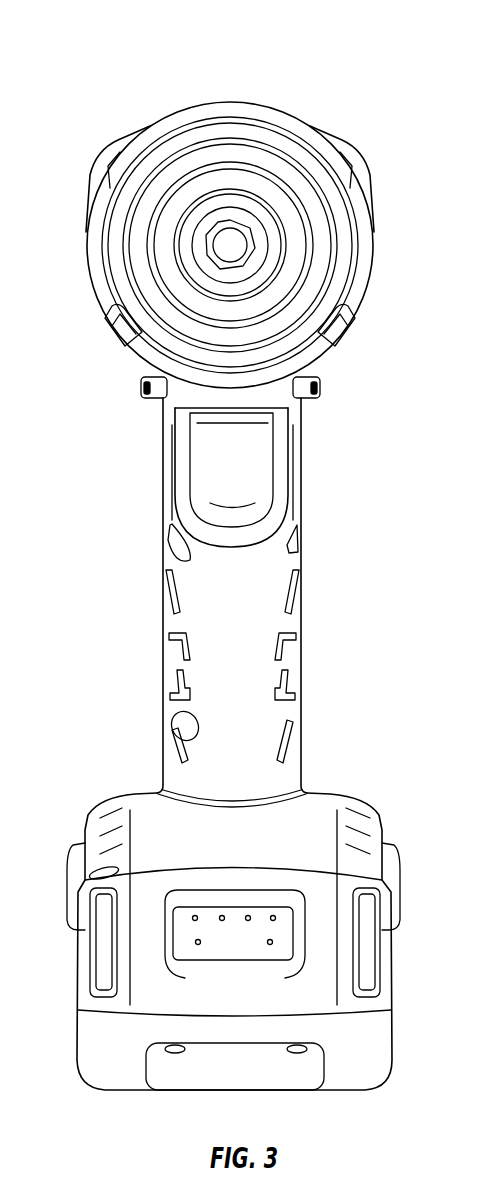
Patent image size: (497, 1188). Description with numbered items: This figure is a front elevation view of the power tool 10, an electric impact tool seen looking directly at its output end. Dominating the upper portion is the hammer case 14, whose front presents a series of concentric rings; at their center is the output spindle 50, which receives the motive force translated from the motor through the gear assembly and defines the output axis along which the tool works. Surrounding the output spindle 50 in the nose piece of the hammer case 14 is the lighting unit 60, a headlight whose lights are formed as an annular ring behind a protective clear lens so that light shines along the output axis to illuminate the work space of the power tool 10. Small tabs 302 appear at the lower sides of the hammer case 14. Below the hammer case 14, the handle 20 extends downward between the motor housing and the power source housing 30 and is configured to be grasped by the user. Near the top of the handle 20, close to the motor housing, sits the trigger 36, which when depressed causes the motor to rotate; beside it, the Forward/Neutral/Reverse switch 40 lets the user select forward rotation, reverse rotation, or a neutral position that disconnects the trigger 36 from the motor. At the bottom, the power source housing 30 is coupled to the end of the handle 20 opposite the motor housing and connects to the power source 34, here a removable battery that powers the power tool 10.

The power tool 10 is at (333, 77).
The hammer case 14 is at (316, 128).
The lighting unit 60 is at (322, 218).
The output spindle 50 is at (228, 243).
The protrusion 302 is at (342, 325).
The Forward/Neutral/Reverse switch 40 is at (322, 388).
The trigger 36 is at (243, 473).
The handle 20 is at (303, 555).
The power source housing 30 is at (313, 793).
The power source 34 is at (385, 970).